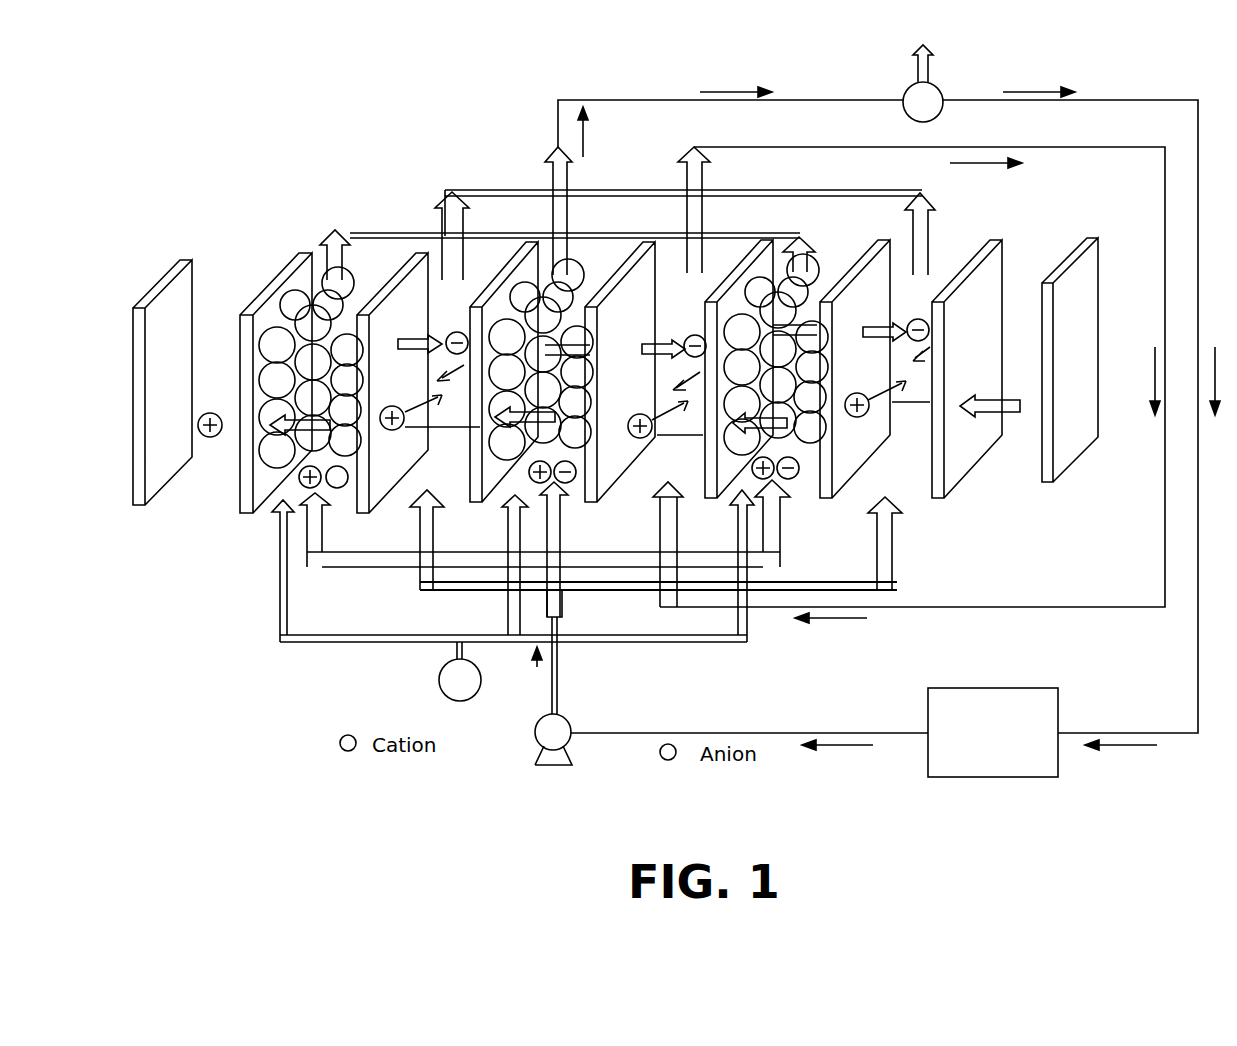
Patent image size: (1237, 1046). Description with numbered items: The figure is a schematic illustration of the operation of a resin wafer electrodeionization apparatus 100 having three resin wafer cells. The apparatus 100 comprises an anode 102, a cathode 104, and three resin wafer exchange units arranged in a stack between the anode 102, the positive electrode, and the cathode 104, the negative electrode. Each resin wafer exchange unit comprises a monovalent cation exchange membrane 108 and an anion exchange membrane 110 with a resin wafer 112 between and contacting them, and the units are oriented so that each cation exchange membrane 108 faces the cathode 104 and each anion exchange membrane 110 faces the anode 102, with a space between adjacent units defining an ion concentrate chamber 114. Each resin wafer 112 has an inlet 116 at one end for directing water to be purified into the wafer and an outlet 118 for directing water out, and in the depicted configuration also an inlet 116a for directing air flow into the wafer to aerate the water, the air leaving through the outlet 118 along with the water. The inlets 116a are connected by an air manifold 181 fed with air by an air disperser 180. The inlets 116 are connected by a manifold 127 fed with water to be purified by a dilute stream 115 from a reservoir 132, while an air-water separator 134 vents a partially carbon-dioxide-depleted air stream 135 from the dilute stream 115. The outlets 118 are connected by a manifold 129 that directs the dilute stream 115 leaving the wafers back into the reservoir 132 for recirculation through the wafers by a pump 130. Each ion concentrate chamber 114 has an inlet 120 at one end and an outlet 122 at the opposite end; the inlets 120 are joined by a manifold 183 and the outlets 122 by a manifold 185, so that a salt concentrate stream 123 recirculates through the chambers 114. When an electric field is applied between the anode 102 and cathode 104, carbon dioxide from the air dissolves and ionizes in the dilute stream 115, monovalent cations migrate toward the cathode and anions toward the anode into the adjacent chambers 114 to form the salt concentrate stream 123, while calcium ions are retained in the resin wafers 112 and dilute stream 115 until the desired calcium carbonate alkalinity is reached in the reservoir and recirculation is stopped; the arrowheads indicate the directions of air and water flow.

The apparatus 100 is at (411, 158).
The anode 102 is at (1048, 484).
The cathode 104 is at (140, 502).
The monovalent cation exchange membrane 108 is at (240, 498).
The anion exchange membrane 110 is at (371, 500).
The resin wafer 112 is at (372, 275).
The ion concentrate chamber 114 is at (458, 485).
The dilute stream 115 is at (600, 100).
The inlet 116 is at (318, 520).
The inlet 116a is at (277, 523).
The outlet 118 is at (818, 240).
The inlet 120 is at (434, 518).
The outlet 122 is at (460, 213).
The salt concentrate stream 123 is at (733, 146).
The manifold 127 is at (365, 568).
The manifold 129 is at (360, 235).
The pump 130 is at (553, 767).
The reservoir 132 is at (1017, 770).
The air-water separator 134 is at (932, 98).
The air stream 135 is at (928, 48).
The air disperser 180 is at (455, 677).
The air manifold 181 is at (662, 643).
The manifold 183 is at (460, 592).
The manifold 185 is at (605, 192).